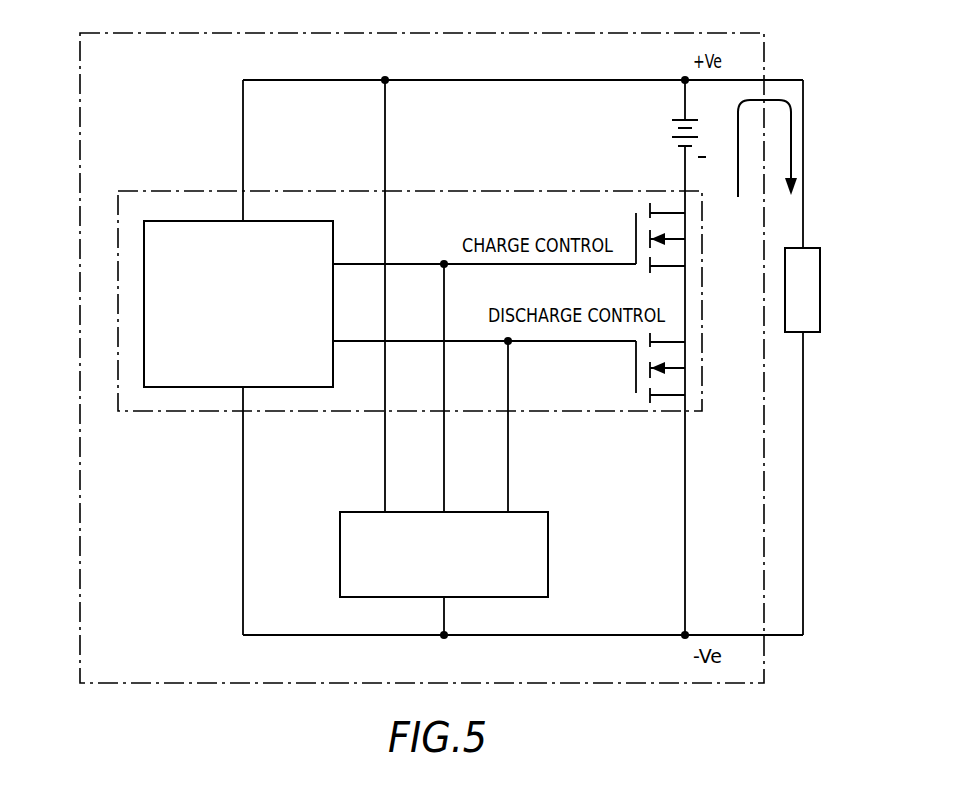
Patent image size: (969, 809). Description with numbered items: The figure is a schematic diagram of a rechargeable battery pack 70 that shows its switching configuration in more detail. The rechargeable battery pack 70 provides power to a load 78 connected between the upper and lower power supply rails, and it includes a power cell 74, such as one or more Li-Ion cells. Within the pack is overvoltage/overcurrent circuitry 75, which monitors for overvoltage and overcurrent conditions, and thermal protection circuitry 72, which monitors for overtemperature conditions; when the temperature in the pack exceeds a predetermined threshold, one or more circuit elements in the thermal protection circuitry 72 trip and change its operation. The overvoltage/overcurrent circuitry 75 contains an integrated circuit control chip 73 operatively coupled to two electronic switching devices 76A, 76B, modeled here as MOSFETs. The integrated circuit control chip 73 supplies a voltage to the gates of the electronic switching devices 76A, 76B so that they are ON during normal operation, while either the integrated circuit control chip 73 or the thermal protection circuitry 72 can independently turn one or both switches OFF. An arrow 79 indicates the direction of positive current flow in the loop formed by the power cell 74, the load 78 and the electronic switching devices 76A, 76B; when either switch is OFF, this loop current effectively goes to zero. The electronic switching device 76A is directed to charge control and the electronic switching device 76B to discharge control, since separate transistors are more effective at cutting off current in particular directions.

The rechargeable battery pack 70 is at (80, 72).
The thermal protection circuitry 72 is at (340, 545).
The integrated circuit control chip 73 is at (335, 250).
The power cell 74 is at (665, 128).
The overvoltage/overcurrent circuitry 75 is at (288, 190).
The electronic switching device 76A is at (690, 212).
The electronic switching device 76B is at (690, 388).
The load 78 is at (820, 262).
The arrow 79 is at (772, 88).